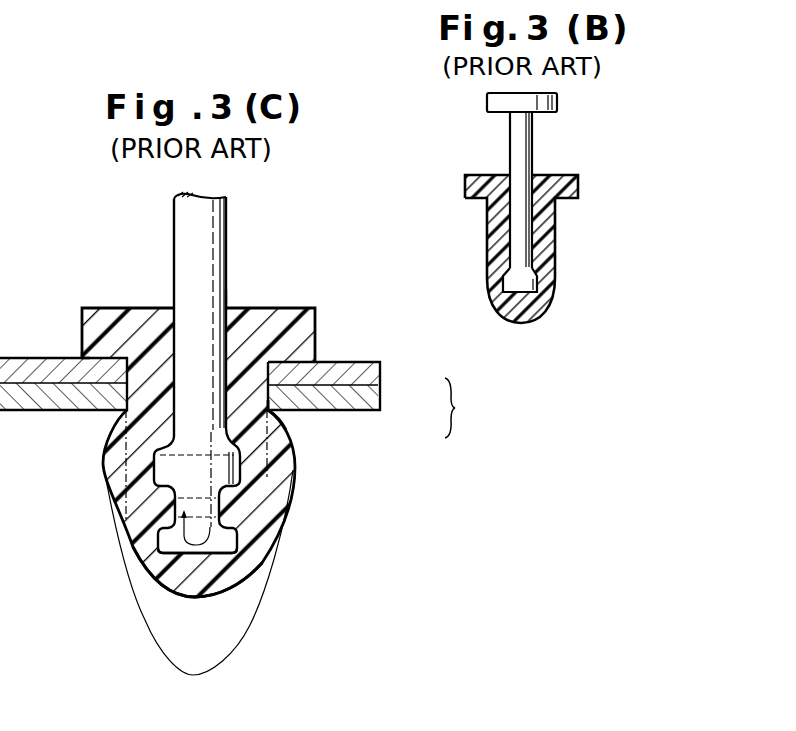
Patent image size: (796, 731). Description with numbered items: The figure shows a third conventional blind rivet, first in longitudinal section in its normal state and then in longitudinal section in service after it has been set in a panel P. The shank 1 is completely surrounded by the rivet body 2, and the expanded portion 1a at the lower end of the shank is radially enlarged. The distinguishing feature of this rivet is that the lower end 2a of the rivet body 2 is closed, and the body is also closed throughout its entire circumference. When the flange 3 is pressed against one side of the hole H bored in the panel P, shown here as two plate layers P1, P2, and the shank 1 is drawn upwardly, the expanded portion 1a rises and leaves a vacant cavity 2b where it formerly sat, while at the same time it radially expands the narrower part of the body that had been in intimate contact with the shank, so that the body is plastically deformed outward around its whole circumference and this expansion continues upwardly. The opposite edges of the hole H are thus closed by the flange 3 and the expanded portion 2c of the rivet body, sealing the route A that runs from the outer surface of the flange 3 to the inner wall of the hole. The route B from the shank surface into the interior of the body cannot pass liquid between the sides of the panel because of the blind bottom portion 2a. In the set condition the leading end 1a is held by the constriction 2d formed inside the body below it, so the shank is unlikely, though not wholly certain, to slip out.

In FIG. 3C, the shank 1 is at (194, 240).
In FIG. 3B, the shank 1 is at (525, 143).
In FIG. 3C, the expanded portion 1a is at (170, 468).
In FIG. 3B, the expanded portion 1a is at (513, 285).
In FIG. 3C, the rivet body 2 is at (135, 508).
In FIG. 3C, the lower end of the rivet body 2a is at (215, 582).
In FIG. 3B, the lower end of the rivet body 2a is at (522, 306).
In FIG. 3C, the vacant cavity 2b is at (210, 543).
In FIG. 3C, the expanded portion of the rivet body 2c is at (270, 411).
In FIG. 3C, the constriction 2d is at (225, 505).
In FIG. 3C, the flange 3 is at (106, 316).
In FIG. 3B, the flange 3 is at (478, 187).
In FIG. 3C, the route A is at (82, 358).
In FIG. 3C, the route B is at (228, 300).
In FIG. 3C, the hole H is at (270, 380).
In FIG. 3C, the panel P is at (460, 408).
In FIG. 3C, the first panel P1 is at (375, 375).
In FIG. 3C, the second panel P2 is at (376, 398).